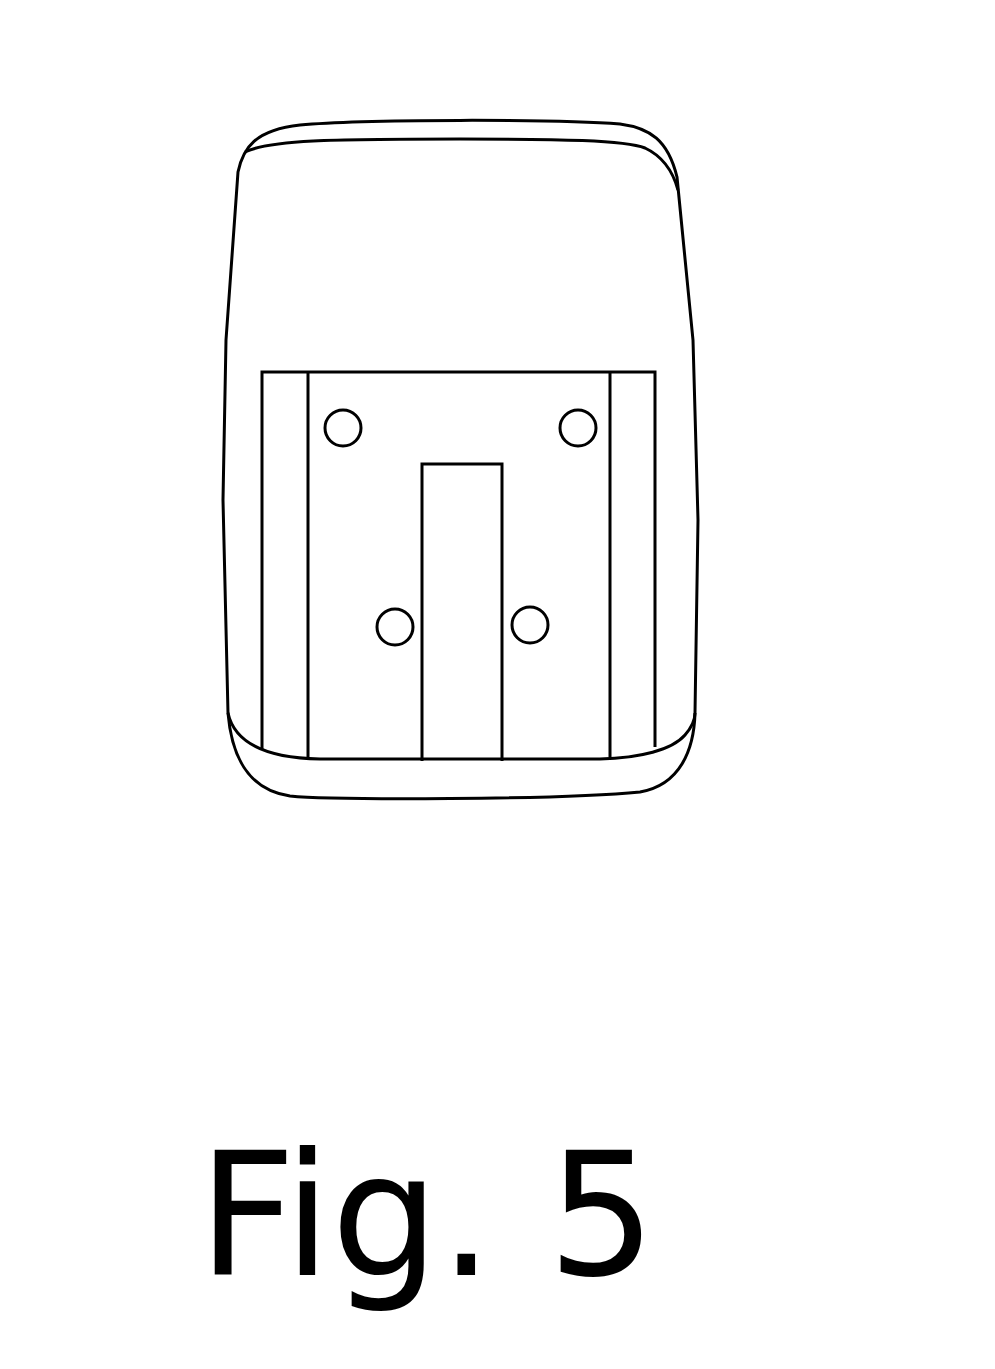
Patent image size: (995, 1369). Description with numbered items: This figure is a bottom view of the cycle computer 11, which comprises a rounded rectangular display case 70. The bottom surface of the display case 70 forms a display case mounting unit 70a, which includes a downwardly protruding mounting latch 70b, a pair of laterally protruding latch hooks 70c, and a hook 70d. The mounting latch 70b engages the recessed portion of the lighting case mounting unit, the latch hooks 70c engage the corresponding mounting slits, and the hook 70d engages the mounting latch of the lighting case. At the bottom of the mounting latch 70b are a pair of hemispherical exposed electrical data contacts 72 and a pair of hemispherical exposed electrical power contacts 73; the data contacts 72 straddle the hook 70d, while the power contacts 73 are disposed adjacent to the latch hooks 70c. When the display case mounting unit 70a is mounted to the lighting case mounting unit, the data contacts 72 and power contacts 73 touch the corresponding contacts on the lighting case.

The cycle computer 11 is at (216, 221).
The display case 70 is at (274, 314).
The display case mounting unit 70a is at (332, 328).
The mounting latch 70b is at (588, 515).
The latch hooks 70c is at (282, 622).
The hook 70d is at (490, 539).
The electrical data contacts 72 is at (400, 645).
The electrical power contacts 73 is at (350, 412).